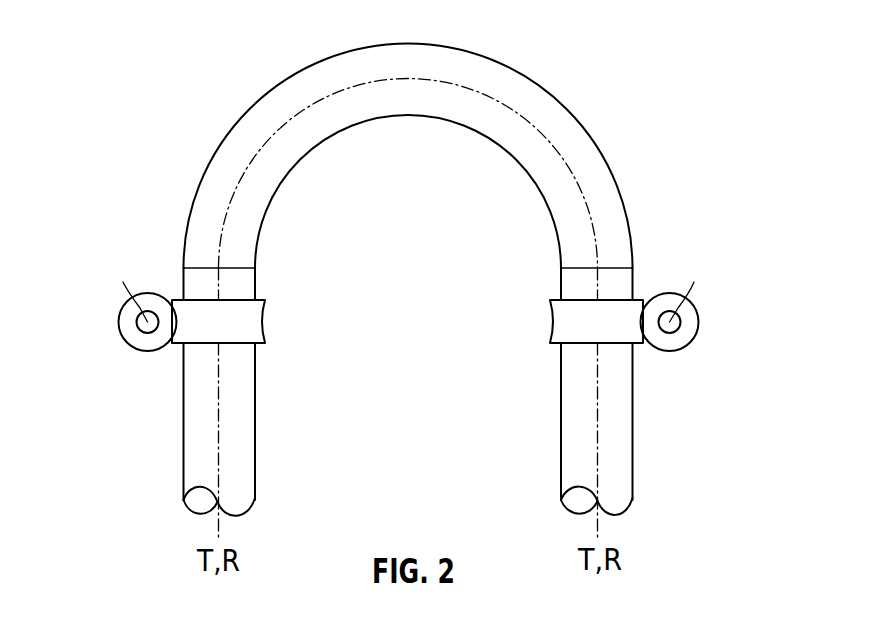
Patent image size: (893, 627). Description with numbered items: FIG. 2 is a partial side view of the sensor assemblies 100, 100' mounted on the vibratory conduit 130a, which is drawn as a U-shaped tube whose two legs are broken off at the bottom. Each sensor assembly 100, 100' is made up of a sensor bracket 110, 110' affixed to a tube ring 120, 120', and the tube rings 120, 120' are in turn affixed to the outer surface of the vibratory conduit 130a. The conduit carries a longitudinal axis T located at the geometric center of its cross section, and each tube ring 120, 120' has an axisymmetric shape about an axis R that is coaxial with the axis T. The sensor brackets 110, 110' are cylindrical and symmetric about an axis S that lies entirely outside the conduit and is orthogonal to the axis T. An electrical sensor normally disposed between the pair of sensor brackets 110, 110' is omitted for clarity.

The sensor assembly 100 is at (208, 311).
The sensor assembly 100' is at (607, 334).
The sensor bracket 110 is at (104, 328).
The sensor bracket 110' is at (717, 318).
The tube ring 120 is at (262, 339).
The tube ring 120' is at (550, 305).
The vibratory conduit 130a is at (590, 135).